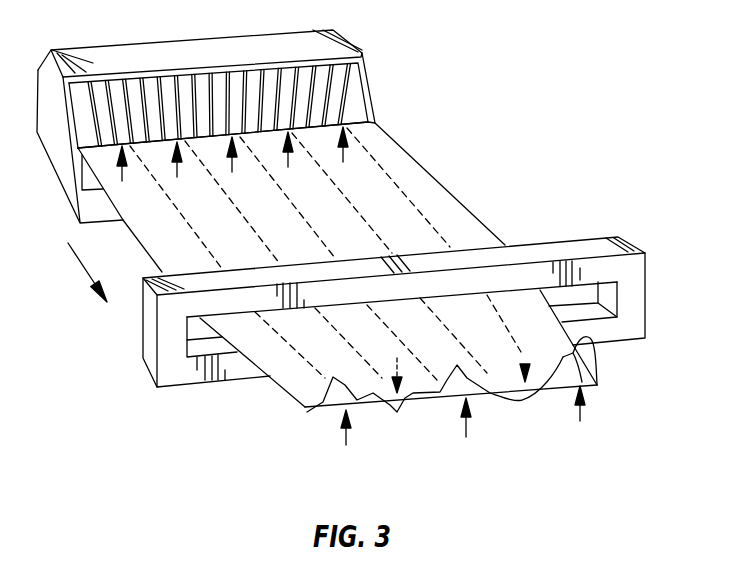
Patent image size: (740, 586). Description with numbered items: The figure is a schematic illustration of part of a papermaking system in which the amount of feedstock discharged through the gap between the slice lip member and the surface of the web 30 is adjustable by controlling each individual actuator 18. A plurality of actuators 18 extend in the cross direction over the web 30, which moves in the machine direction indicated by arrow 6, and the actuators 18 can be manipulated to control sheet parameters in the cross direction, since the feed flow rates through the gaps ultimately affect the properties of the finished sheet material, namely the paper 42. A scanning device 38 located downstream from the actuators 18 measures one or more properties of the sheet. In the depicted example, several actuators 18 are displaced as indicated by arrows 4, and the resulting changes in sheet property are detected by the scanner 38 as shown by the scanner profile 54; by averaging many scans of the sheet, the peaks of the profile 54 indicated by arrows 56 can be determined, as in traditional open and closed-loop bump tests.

The actuator 18 is at (350, 93).
The web 30 is at (417, 165).
The arrows indicating actuator displacement 4 is at (122, 170).
The arrow indicating machine direction 6 is at (80, 263).
The scanning device 38 is at (543, 253).
The paper 42 is at (292, 377).
The scanner profile 54 is at (590, 337).
The arrows indicating profile peaks 56 is at (396, 364).